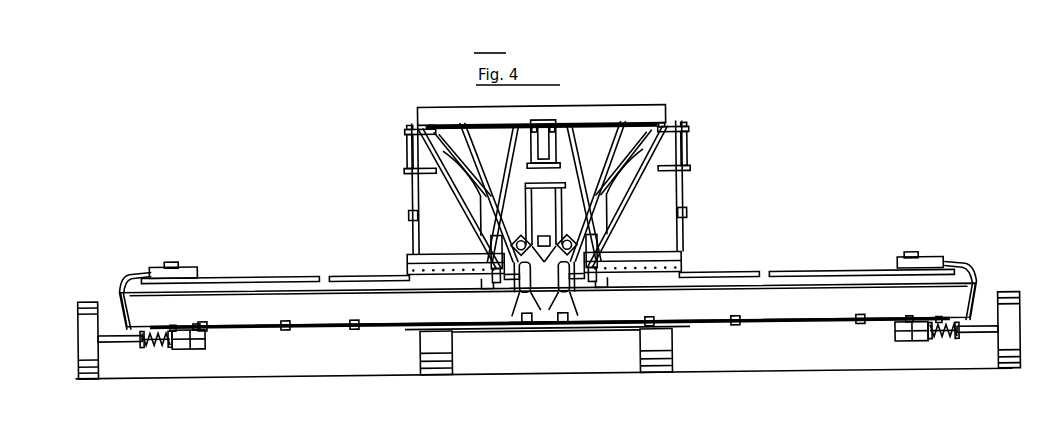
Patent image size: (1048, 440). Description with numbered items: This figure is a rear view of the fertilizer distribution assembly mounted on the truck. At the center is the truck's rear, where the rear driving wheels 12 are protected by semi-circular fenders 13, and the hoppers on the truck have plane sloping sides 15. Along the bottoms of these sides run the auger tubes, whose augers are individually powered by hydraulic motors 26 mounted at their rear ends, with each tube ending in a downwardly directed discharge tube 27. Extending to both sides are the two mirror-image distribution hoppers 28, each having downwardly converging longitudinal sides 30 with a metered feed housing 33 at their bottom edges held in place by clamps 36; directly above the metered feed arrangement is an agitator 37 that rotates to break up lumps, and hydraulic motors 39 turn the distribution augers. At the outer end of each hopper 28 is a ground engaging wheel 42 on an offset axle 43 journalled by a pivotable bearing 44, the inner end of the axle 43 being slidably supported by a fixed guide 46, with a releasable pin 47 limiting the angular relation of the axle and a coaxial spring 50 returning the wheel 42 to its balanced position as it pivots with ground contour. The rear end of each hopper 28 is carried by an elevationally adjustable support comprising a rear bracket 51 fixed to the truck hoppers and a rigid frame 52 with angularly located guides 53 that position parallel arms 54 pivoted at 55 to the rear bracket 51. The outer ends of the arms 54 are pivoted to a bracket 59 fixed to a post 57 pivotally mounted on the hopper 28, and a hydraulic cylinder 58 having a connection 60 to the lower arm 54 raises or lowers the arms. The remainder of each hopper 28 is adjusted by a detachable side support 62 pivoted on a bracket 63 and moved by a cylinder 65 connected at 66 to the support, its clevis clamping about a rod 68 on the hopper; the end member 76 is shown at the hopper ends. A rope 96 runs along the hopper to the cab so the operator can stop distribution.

The rear driving wheels 12 is at (428, 349).
The semi-circular fenders 13 is at (410, 262).
The plane sloping sides 15 is at (470, 167).
The hydraulic motors 26 is at (536, 236).
The discharge tube 27 is at (597, 221).
The distribution hoppers 28 is at (282, 273).
The longitudinal sides 30 is at (270, 309).
The metered feed housing 33 is at (330, 325).
The clamps 36 is at (205, 328).
The agitator 37 is at (557, 307).
The hydraulic motors 39 is at (518, 287).
The ground engaging wheel 42 is at (86, 328).
The offset axle 43 is at (124, 339).
The bearing 44 is at (150, 343).
The fixed guide 46 is at (180, 346).
The releasable pin 47 is at (197, 321).
The coaxial spring 50 is at (172, 321).
The rear bracket 51 is at (550, 124).
The rigid frame 52 is at (575, 125).
The guides 53 is at (482, 168).
The parallel arms 54 is at (515, 188).
The pivot 55 is at (533, 129).
The post 57 is at (480, 284).
The hydraulic cylinder 58 is at (535, 212).
The bracket 59 is at (491, 246).
The connection 60 is at (563, 184).
The detachable side support 62 is at (413, 233).
The bracket 63 is at (407, 131).
The cylinder 65 is at (409, 152).
The connection 66 is at (410, 214).
The rod 68 is at (170, 263).
The end bracket 76 is at (125, 303).
The rope 96 is at (463, 212).